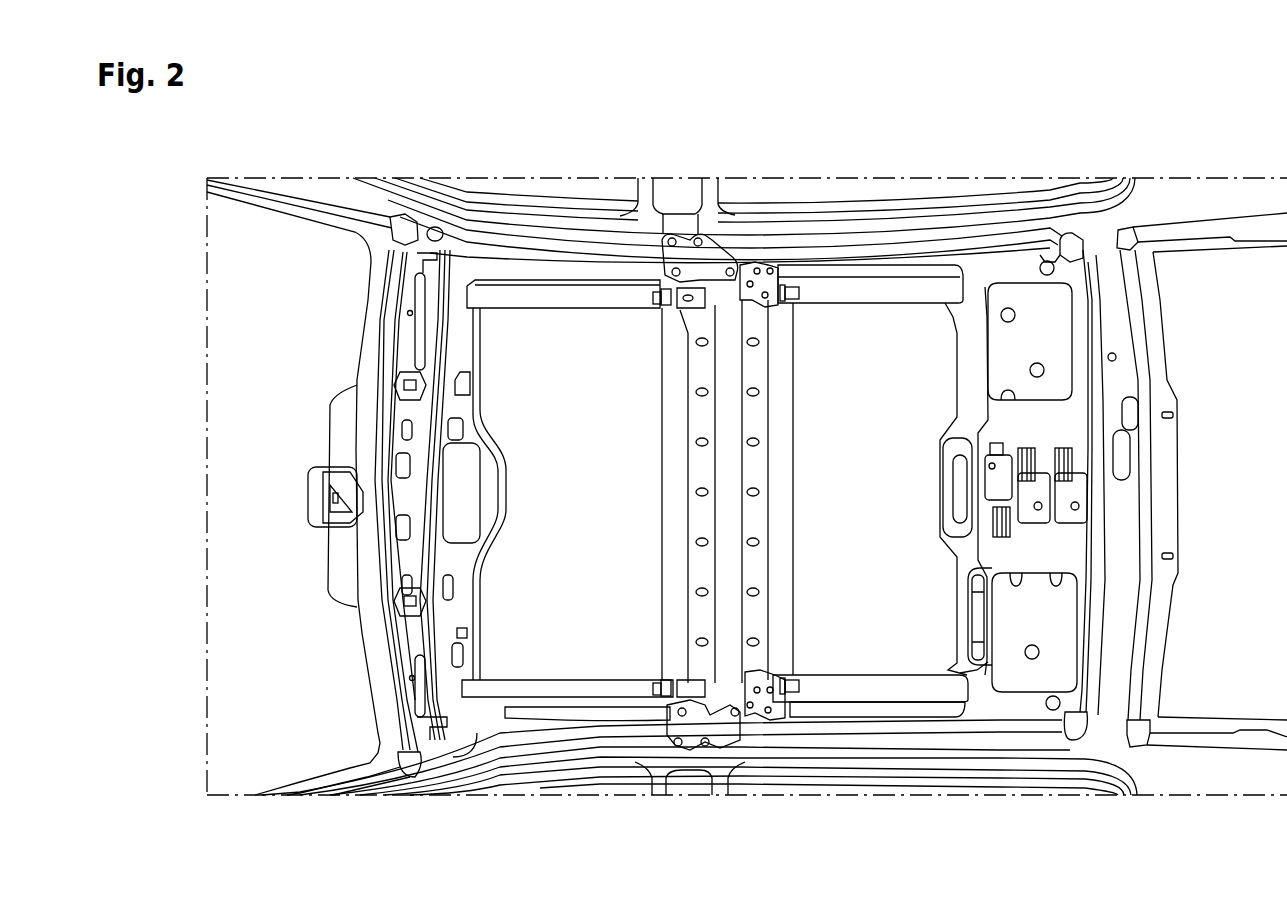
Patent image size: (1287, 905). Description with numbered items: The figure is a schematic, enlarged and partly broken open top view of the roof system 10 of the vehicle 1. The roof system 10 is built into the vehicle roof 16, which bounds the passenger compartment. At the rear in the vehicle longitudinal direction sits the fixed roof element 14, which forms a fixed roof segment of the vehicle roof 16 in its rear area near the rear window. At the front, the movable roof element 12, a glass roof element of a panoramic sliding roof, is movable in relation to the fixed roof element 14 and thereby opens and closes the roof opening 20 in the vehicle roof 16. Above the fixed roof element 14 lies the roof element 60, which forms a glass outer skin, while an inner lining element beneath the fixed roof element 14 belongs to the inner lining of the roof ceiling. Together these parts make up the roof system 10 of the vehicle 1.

The vehicle 1 is at (278, 126).
The roof system 10 is at (947, 160).
The roof element 12 is at (561, 375).
The fixed roof element 14 is at (1020, 272).
The vehicle roof 16 is at (849, 846).
The roof opening 20 is at (478, 372).
The roof element 60 is at (858, 375).